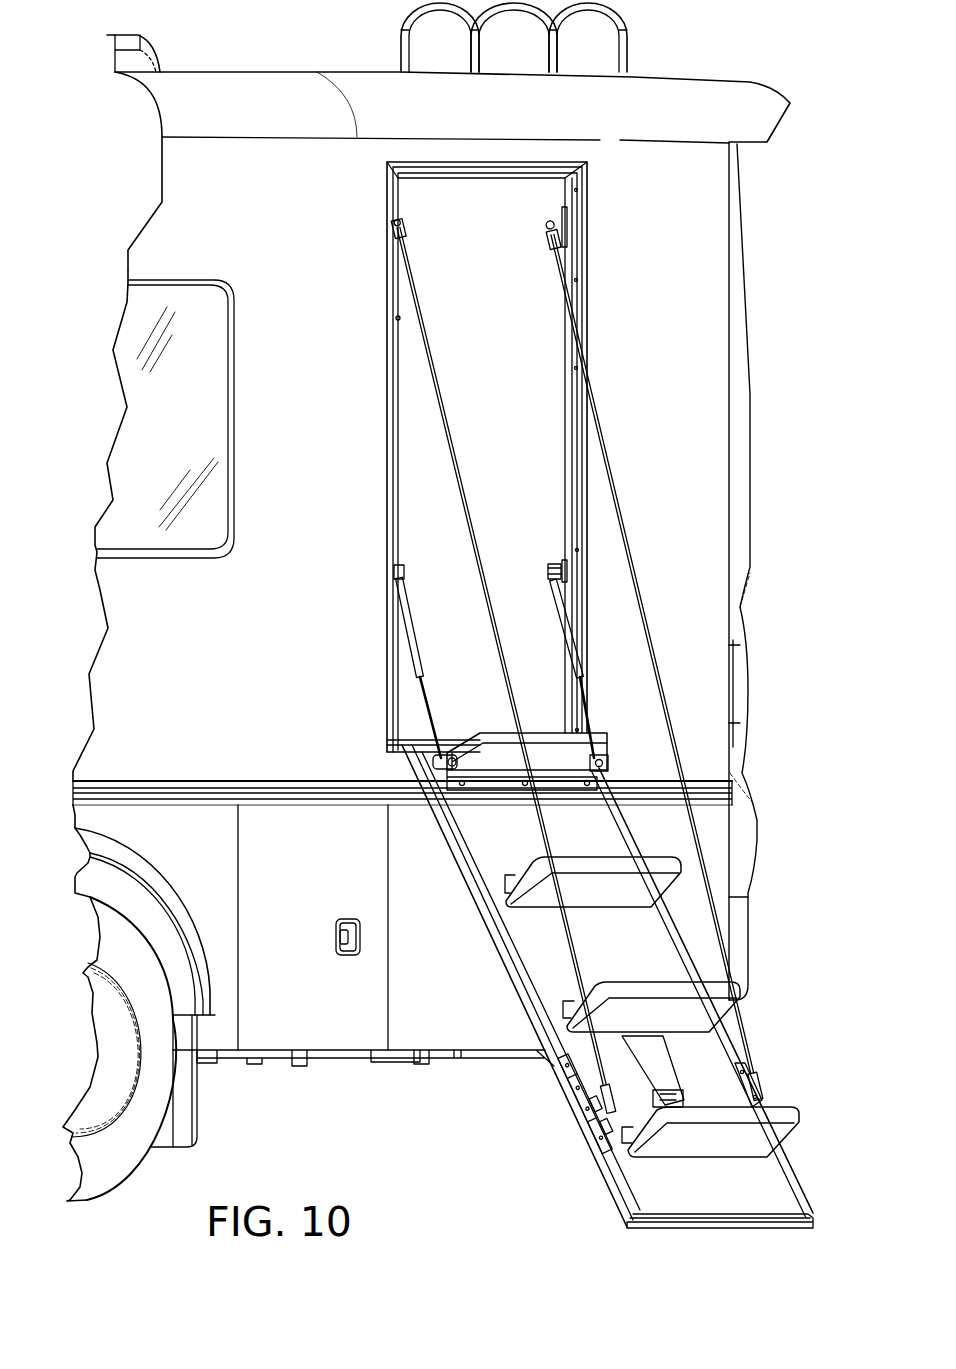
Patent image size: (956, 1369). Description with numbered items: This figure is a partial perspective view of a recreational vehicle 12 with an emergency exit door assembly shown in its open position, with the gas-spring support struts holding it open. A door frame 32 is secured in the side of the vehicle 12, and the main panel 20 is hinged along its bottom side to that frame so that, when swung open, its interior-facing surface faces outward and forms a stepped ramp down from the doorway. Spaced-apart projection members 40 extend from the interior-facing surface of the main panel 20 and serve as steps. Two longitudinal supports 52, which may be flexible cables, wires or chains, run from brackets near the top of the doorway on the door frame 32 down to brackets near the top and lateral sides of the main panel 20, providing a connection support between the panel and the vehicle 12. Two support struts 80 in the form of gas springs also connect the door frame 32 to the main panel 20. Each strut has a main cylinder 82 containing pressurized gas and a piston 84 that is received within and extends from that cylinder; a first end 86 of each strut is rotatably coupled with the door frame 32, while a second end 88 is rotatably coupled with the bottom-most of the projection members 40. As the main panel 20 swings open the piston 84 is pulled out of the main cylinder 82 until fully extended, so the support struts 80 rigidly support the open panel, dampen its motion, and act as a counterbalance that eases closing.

The vehicle 12 is at (696, 421).
The main panel 20 is at (551, 958).
The door frame 32 is at (388, 416).
The projection members 40 is at (587, 745).
The longitudinal supports 52 is at (447, 413).
The support struts 80 is at (491, 646).
The main cylinder 82 is at (418, 649).
The piston 84 is at (430, 700).
The first end 86 is at (399, 573).
The second end 88 is at (436, 763).